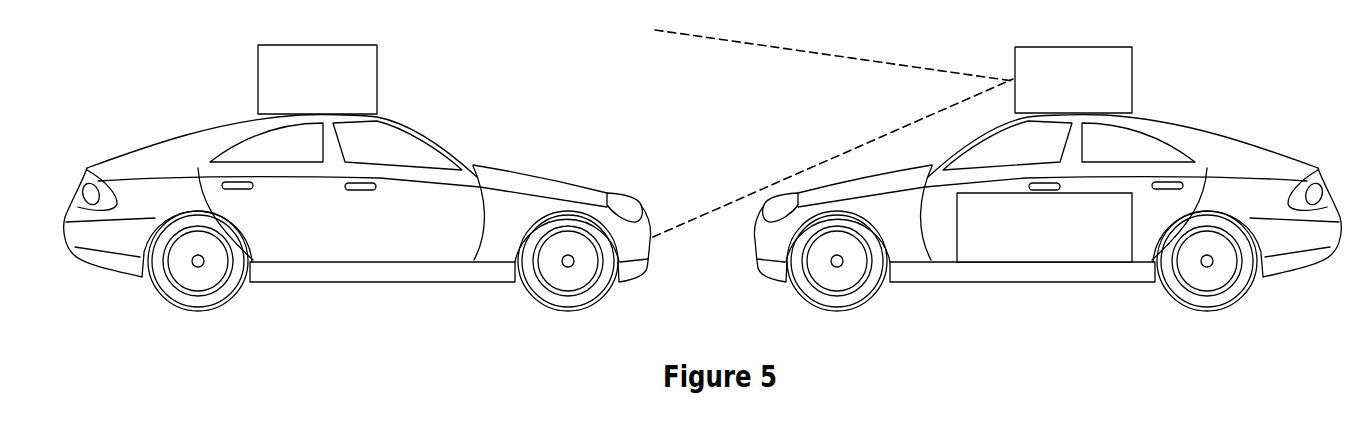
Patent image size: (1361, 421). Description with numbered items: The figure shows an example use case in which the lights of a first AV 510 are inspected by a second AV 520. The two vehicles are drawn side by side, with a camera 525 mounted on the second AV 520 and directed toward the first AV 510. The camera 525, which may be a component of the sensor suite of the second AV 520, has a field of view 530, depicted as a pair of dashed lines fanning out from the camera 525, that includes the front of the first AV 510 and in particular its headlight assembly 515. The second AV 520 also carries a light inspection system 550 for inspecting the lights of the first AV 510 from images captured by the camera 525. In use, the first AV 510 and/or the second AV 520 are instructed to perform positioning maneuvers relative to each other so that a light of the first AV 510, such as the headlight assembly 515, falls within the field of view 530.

The first AV 510 is at (357, 178).
The headlight assembly 515 is at (622, 193).
The second AV 520 is at (1212, 162).
The camera 525 is at (1053, 107).
The field of view 530 is at (797, 111).
The light inspection system 550 is at (1100, 253).